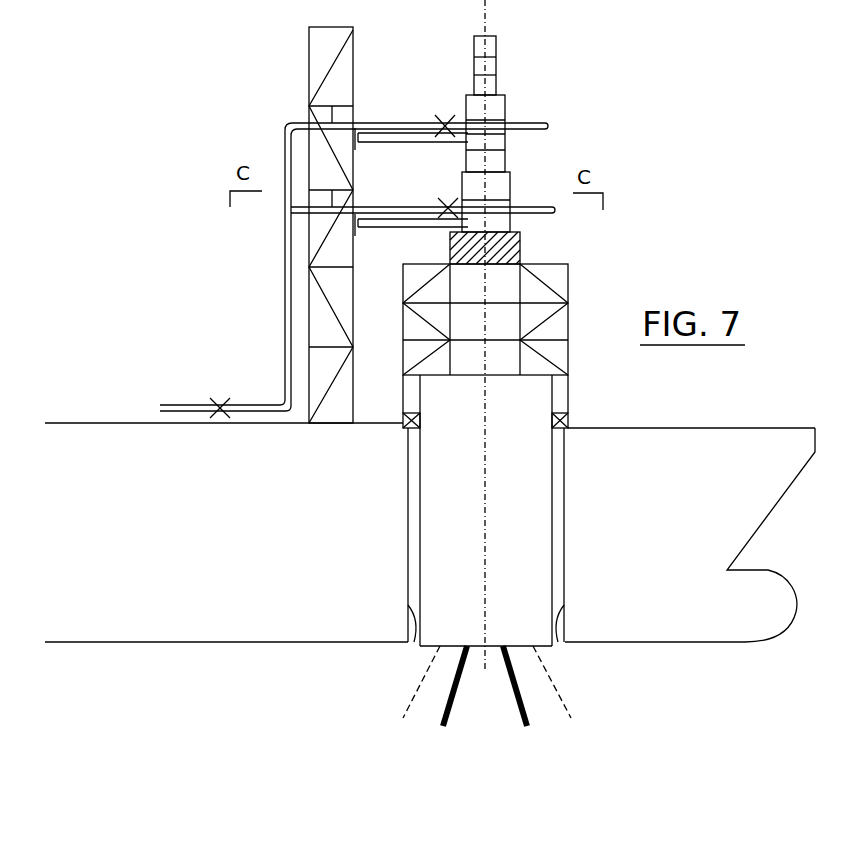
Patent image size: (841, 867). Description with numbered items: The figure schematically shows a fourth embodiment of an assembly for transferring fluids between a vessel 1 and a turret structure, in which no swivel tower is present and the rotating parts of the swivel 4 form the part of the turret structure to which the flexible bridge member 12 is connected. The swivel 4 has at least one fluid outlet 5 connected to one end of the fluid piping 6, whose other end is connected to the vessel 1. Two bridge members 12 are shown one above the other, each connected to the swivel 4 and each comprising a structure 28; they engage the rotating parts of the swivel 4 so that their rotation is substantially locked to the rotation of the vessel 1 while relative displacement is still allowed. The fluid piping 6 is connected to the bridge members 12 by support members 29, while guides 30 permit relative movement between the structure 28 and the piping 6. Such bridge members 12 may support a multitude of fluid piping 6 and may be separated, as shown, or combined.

The vessel 1 is at (75, 432).
The swivel 4 is at (508, 112).
The fluid outlet 5 is at (365, 190).
The fluid piping 6 is at (285, 136).
The flexible bridge member 12 is at (414, 143).
The structure 28 is at (307, 62).
The support member 29 is at (442, 120).
The guide 30 is at (310, 106).